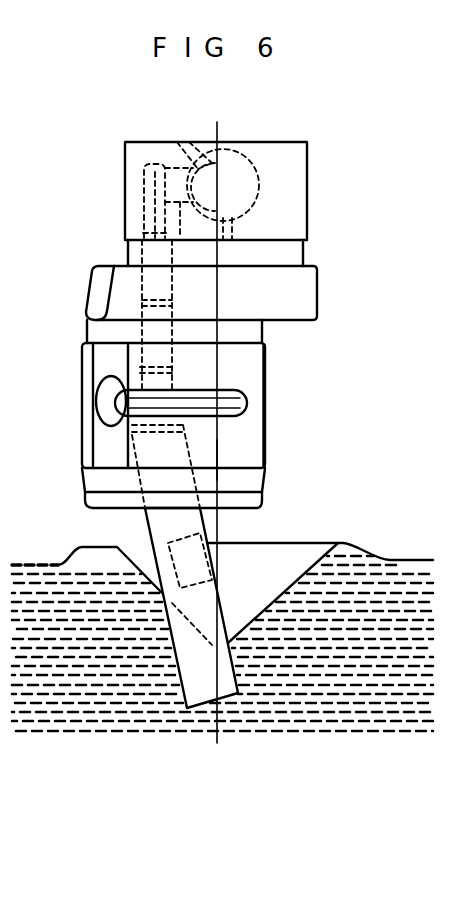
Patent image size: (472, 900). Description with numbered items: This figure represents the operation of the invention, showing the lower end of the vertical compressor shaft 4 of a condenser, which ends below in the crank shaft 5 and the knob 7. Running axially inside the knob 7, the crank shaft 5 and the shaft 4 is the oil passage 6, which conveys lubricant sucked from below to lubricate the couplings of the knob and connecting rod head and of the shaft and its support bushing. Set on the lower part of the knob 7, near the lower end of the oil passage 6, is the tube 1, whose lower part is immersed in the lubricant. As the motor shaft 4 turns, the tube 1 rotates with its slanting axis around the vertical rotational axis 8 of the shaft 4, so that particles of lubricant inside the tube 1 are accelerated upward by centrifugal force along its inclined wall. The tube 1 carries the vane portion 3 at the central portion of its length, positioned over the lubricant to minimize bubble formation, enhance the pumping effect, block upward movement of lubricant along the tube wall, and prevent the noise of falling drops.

The tube 1 is at (148, 533).
The vane portion 3 is at (212, 560).
The shaft 4 is at (299, 216).
The crank shaft 5 is at (313, 297).
The oil passage 6 is at (143, 356).
The knob 7 is at (258, 382).
The vertical rotational axis 8 is at (217, 458).